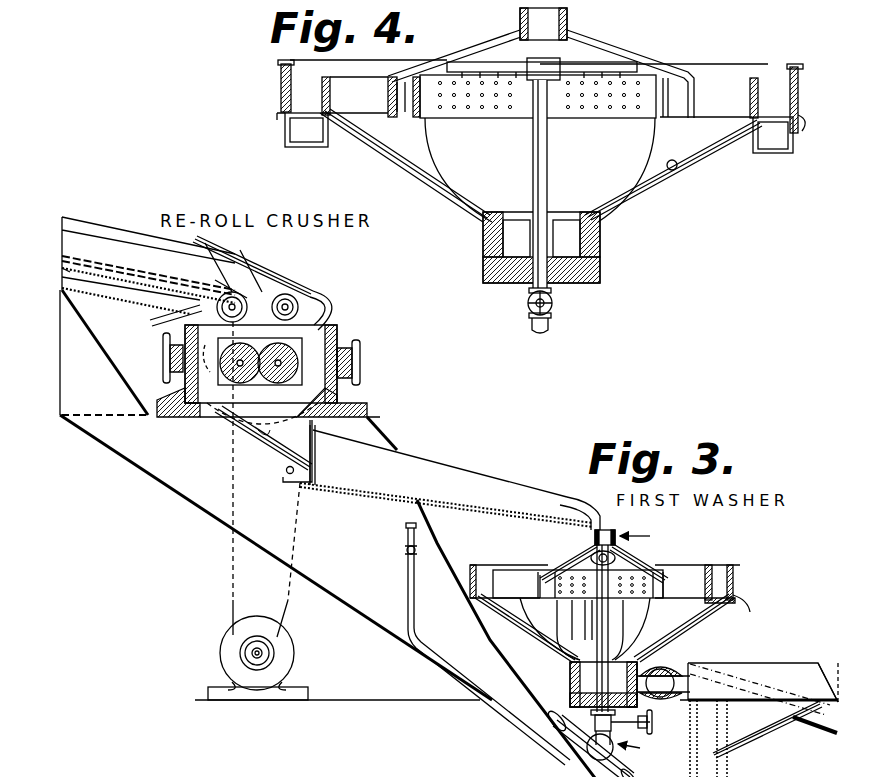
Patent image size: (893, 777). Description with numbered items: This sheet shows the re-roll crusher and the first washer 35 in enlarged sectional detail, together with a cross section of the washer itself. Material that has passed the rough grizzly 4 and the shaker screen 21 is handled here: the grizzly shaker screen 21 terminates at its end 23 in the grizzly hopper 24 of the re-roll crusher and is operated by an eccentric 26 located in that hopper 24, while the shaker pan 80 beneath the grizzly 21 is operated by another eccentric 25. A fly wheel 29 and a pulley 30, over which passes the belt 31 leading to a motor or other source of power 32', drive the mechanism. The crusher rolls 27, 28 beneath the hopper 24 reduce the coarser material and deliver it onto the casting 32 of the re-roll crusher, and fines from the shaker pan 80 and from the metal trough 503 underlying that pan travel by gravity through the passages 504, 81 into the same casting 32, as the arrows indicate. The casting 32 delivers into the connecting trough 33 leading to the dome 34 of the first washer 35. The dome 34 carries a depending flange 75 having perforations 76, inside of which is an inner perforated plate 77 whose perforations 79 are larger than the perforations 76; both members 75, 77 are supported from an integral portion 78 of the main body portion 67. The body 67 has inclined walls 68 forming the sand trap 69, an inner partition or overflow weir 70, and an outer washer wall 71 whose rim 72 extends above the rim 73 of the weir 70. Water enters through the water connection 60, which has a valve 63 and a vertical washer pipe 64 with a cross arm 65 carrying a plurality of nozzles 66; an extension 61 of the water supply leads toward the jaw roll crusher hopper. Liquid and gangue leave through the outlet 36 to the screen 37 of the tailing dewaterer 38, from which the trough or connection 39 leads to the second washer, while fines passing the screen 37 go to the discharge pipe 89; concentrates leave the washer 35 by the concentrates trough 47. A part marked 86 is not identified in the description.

In FIG. 3, the rough grizzly 4 is at (632, 646).
In FIG. 3, the grizzly shaker screen 21 is at (88, 252).
In FIG. 3, the other end of grizzly 23 is at (240, 292).
In FIG. 3, the grizzly hopper 24 is at (270, 275).
In FIG. 3, the eccentric 25 is at (166, 318).
In FIG. 3, the eccentric 26 is at (295, 305).
In FIG. 3, the crusher roll 27 is at (205, 405).
In FIG. 3, the crusher roll 28 is at (300, 355).
In FIG. 3, the fly wheel 29 is at (322, 292).
In FIG. 3, the pulley 30 is at (278, 425).
In FIG. 3, the belt 31 is at (240, 465).
In FIG. 3, the casting of the re-roll crusher 32 is at (266, 479).
In FIG. 3, the motor or other source of power 32' is at (269, 658).
In FIG. 3, the connecting trough 33 is at (425, 485).
In FIG. 4, the dome 34 is at (468, 42).
In FIG. 3, the dome 34 is at (582, 545).
In FIG. 4, the first washer 35 is at (648, 68).
In FIG. 3, the first washer 35 is at (640, 562).
In FIG. 3, the liquid and gangue outlet 36 is at (662, 665).
In FIG. 3, the screen 37 is at (742, 697).
In FIG. 3, the tailing dewaterer 38 is at (790, 668).
In FIG. 3, the trough or connection 39 is at (826, 670).
In FIG. 3, the concentrates connection or trough 47 is at (700, 668).
In FIG. 4, the water connection 60 is at (552, 326).
In FIG. 3, the water connection 60 is at (585, 750).
In FIG. 3, the extension 61 is at (407, 578).
In FIG. 4, the valve 63 is at (553, 304).
In FIG. 3, the valve 63 is at (655, 720).
In FIG. 4, the washer pipe 64 is at (548, 172).
In FIG. 3, the washer pipe 64 is at (596, 660).
In FIG. 4, the cross arm 65 is at (590, 62).
In FIG. 4, the nozzles 66 is at (470, 95).
In FIG. 3, the nozzles 66 is at (590, 570).
In FIG. 4, the main body portion 67 is at (445, 190).
In FIG. 4, the inclined walls 68 is at (678, 170).
In FIG. 3, the inclined walls 68 is at (690, 625).
In FIG. 4, the sand trap 69 is at (565, 240).
In FIG. 3, the sand trap 69 is at (580, 684).
In FIG. 4, the inner partition or overflow weir 70 is at (750, 96).
In FIG. 3, the inner partition or overflow weir 70 is at (735, 582).
In FIG. 4, the outer washer wall 71 is at (800, 98).
In FIG. 3, the outer washer wall 71 is at (735, 578).
In FIG. 4, the rim 72 is at (798, 66).
In FIG. 3, the rim 72 is at (735, 570).
In FIG. 4, the rim of the weir 73 is at (324, 80).
In FIG. 3, the rim of the weir 73 is at (712, 572).
In FIG. 4, the depending flange 75 is at (398, 112).
In FIG. 3, the depending flange 75 is at (601, 585).
In FIG. 4, the perforations 76 is at (392, 84).
In FIG. 4, the inner perforated member or plate 77 is at (418, 118).
In FIG. 3, the inner perforated member or plate 77 is at (555, 576).
In FIG. 4, the integral portion 78 is at (438, 153).
In FIG. 3, the integral portion 78 is at (532, 620).
In FIG. 4, the perforations 79 is at (436, 80).
In FIG. 3, the perforations 79 is at (668, 572).
In FIG. 3, the shaker pan 80 is at (62, 275).
In FIG. 3, the passage 81 is at (163, 356).
In FIG. 4, the hook 86 is at (808, 118).
In FIG. 3, the hook 86 is at (750, 605).
In FIG. 3, the discharge pipe 89 is at (735, 745).
In FIG. 3, the metal trough 503 is at (130, 233).
In FIG. 3, the passage 504 is at (225, 265).